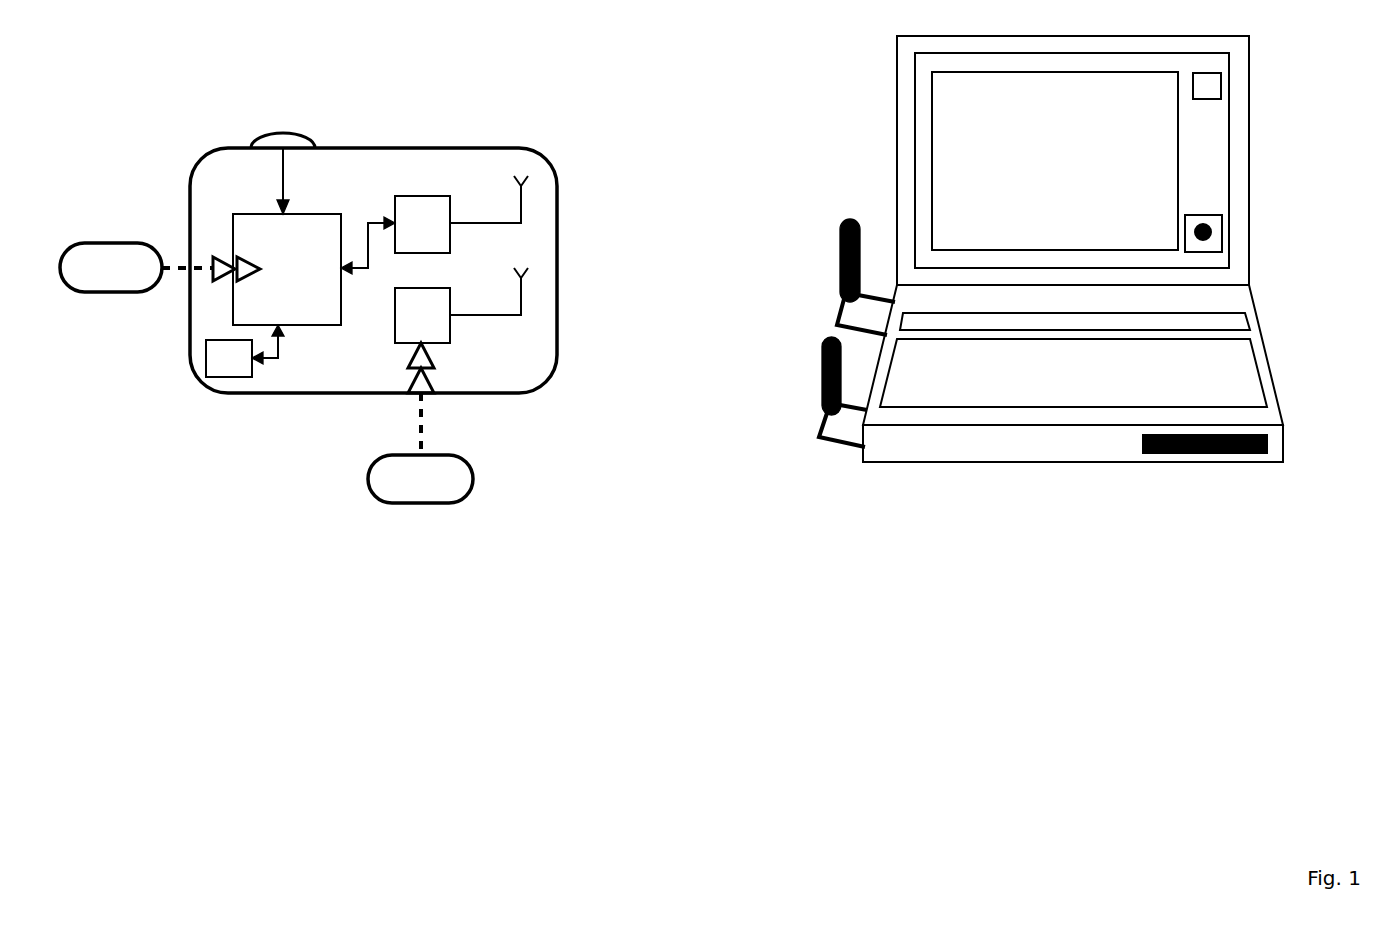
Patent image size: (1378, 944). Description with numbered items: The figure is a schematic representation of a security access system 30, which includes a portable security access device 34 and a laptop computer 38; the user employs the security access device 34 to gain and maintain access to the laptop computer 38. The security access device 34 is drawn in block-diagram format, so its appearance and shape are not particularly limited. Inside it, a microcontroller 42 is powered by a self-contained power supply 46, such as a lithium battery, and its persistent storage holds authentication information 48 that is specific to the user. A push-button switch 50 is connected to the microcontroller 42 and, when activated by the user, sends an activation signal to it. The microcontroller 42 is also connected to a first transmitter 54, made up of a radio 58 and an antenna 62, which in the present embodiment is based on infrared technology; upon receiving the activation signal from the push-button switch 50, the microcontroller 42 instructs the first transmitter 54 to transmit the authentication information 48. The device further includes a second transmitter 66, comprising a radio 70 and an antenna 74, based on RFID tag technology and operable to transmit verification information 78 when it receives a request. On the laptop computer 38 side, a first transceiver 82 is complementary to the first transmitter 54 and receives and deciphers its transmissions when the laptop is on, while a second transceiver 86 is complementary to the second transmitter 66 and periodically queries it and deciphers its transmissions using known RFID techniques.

The security access system 30 is at (273, 709).
The security access device 34 is at (342, 405).
The laptop computer 38 is at (1003, 468).
The microcontroller 42 is at (287, 269).
The power supply 46 is at (245, 351).
The authentication information 48 is at (160, 267).
The push-button switch 50 is at (249, 130).
The first transmitter 54 is at (465, 210).
The radio 58 is at (395, 235).
The antenna 62 is at (512, 160).
The second transmitter 66 is at (460, 306).
The radio 70 is at (422, 315).
The antenna 74 is at (517, 262).
The verification information 78 is at (420, 423).
The first transceiver 82 is at (831, 273).
The second transceiver 86 is at (812, 393).